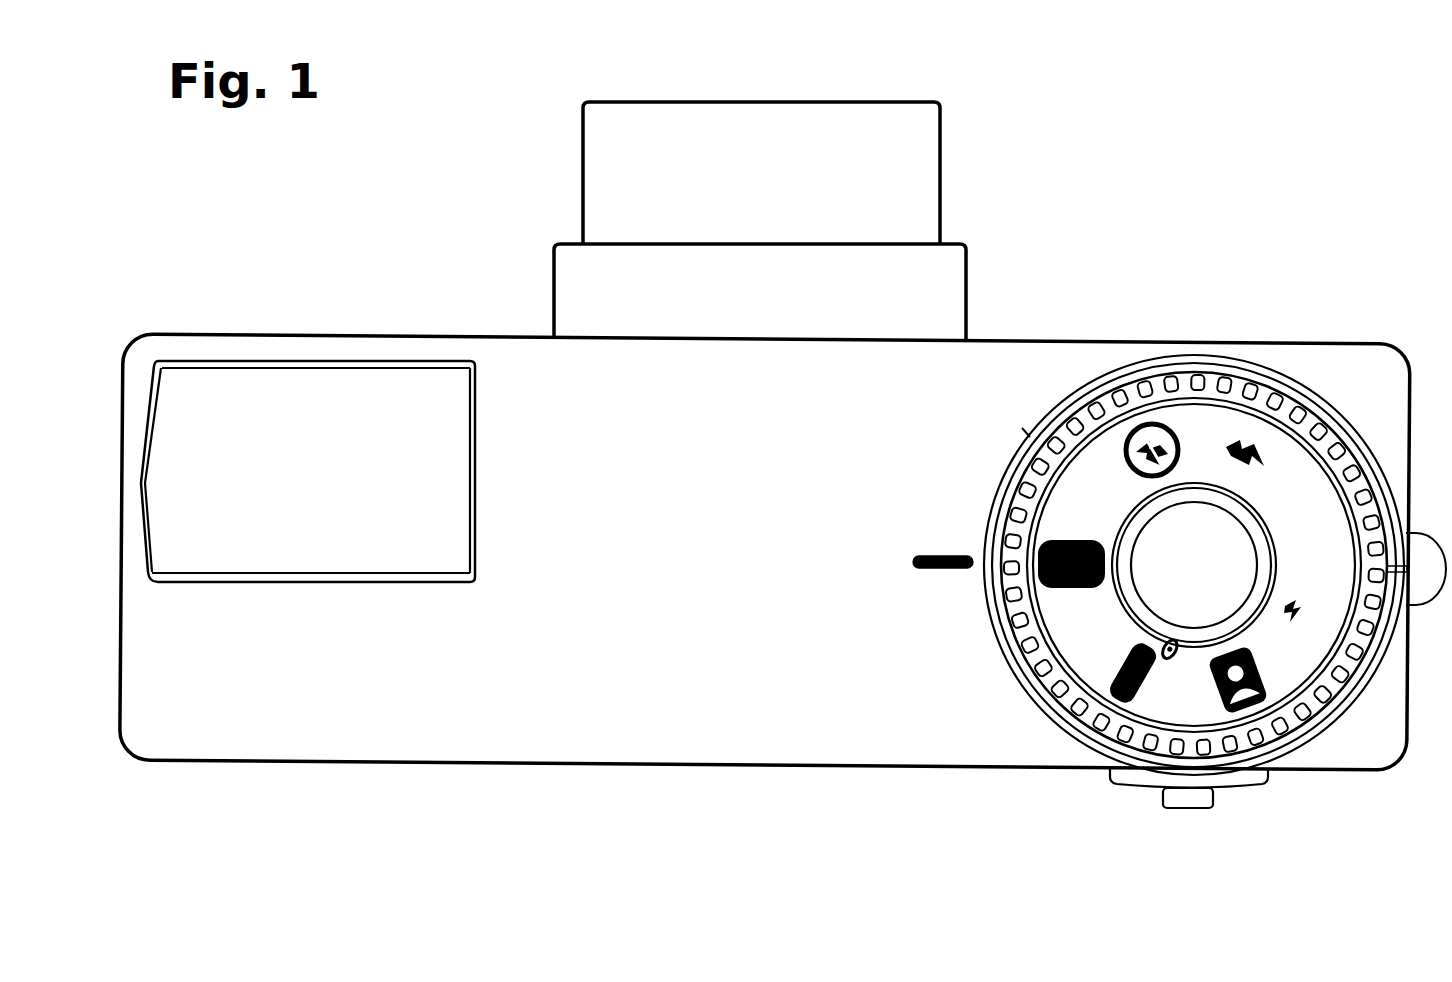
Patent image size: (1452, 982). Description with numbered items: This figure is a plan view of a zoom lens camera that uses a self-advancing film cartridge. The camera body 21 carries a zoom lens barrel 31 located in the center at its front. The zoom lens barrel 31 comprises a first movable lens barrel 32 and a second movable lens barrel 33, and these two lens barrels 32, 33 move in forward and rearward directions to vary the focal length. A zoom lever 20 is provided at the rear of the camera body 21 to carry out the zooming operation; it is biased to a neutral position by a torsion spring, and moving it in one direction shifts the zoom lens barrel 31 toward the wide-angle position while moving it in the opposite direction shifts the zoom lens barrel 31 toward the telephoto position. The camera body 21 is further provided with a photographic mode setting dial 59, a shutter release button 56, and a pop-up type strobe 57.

The zoom lever 20 is at (1185, 802).
The camera body 21 is at (1025, 341).
The zoom lens barrel 31 is at (807, 221).
The first movable lens barrel 32 is at (928, 173).
The second movable lens barrel 33 is at (937, 275).
The shutter release button 56 is at (1232, 543).
The pop-up type strobe 57 is at (287, 388).
The photographic mode setting dial 59 is at (1194, 530).